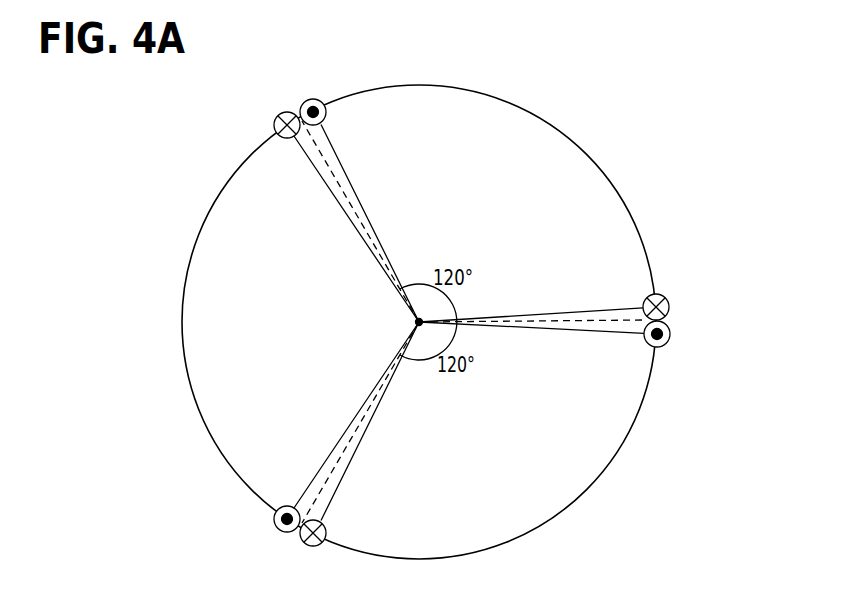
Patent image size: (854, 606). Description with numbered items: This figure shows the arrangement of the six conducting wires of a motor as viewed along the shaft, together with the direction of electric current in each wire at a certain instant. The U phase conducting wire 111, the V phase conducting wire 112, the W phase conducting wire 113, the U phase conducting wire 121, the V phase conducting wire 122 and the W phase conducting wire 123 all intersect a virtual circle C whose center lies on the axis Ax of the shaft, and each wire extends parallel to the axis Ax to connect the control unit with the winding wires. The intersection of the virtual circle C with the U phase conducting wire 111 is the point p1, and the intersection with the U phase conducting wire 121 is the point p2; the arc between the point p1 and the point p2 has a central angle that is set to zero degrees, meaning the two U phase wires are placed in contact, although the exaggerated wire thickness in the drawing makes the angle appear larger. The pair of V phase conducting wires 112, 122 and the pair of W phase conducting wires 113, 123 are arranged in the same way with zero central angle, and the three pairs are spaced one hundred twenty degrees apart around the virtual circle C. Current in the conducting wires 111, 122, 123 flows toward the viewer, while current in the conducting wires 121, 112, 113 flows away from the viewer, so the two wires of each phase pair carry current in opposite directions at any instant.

The U phase conducting wire 111 is at (670, 334).
The U phase conducting wire 121 is at (669, 307).
The V phase conducting wire 112 is at (277, 116).
The V phase conducting wire 122 is at (313, 99).
The W phase conducting wire 113 is at (315, 546).
The W phase conducting wire 123 is at (279, 531).
The virtual circle C is at (617, 188).
The axis Ax is at (418, 328).
The point p1 is at (274, 127).
The point p2 is at (322, 101).